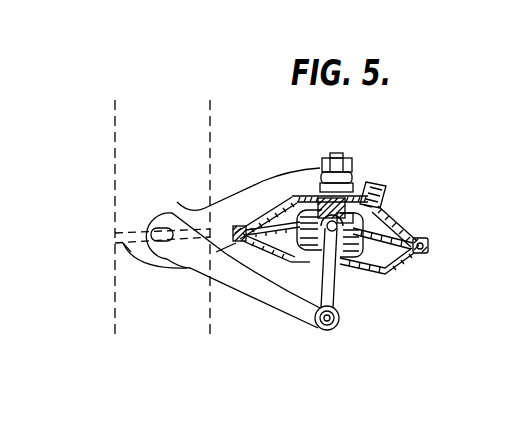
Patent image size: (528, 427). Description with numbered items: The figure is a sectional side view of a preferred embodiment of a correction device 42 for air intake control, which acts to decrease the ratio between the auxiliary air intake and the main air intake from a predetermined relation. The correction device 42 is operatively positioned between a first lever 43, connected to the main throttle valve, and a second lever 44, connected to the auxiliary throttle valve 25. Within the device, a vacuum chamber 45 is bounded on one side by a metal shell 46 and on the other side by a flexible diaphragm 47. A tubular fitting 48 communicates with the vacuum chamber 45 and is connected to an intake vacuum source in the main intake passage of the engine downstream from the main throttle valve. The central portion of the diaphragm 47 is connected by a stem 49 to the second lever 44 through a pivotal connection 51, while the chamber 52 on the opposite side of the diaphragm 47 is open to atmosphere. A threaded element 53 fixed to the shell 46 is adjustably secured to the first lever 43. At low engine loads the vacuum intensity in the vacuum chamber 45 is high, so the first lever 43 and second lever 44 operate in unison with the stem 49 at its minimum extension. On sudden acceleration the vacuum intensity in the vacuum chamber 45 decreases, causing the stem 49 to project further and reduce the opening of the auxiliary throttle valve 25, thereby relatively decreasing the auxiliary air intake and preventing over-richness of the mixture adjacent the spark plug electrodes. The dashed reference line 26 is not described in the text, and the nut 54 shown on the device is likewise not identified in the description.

The auxiliary throttle valve 25 is at (125, 233).
The reference plane line 26 is at (115, 177).
The correction device 42 is at (414, 215).
The first lever 43 is at (270, 188).
The second lever 44 is at (255, 306).
The vacuum chamber 45 is at (303, 193).
The metal shell 46 is at (397, 203).
The flexible diaphragm 47 is at (397, 253).
The tubular fitting 48 is at (388, 185).
The stem 49 is at (329, 284).
The pivotal connection 51 is at (337, 325).
The chamber 52 is at (285, 247).
The threaded element 53 is at (352, 178).
The nut 54 is at (319, 157).